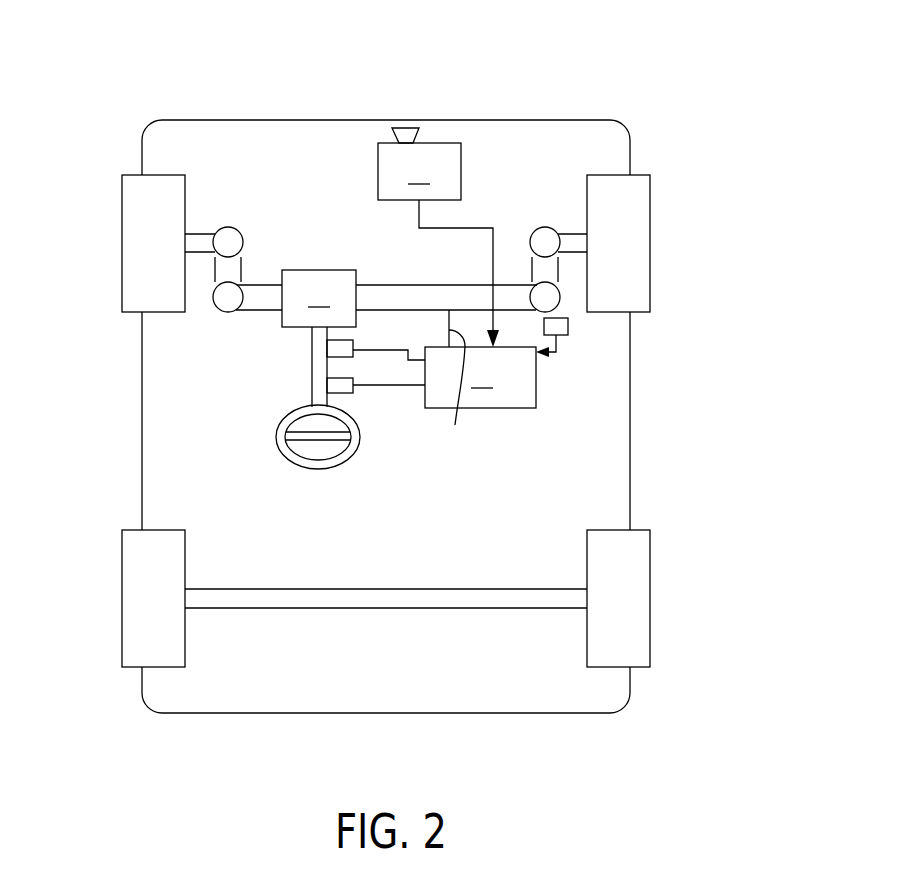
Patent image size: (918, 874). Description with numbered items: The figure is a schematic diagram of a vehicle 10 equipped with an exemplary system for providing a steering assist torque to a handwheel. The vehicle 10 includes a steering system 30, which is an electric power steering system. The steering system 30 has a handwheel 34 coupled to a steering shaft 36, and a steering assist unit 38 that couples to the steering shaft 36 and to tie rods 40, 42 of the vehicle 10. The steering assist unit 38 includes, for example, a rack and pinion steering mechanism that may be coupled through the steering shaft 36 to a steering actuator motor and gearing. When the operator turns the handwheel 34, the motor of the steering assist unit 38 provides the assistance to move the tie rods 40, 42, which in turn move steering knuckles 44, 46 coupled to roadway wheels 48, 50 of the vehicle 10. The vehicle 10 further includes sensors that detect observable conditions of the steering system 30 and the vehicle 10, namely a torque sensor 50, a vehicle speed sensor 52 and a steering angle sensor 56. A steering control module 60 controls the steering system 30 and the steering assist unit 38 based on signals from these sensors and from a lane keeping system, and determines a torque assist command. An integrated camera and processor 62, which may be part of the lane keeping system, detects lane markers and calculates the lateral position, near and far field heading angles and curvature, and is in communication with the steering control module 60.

The vehicle 10 is at (586, 98).
The steering system 30 is at (248, 373).
The handwheel 34 is at (362, 443).
The steering shaft 36 is at (311, 382).
The steering assist unit 38 is at (319, 298).
The tie rod 40 is at (393, 292).
The tie rod 42 is at (459, 303).
The steering knuckle 44 is at (580, 238).
The steering knuckle 46 is at (197, 236).
The roadway wheel 48 is at (650, 228).
The torque sensor 50 is at (121, 218).
The vehicle speed sensor 52 is at (555, 326).
The steering angle sensor 56 is at (346, 385).
The steering control module 60 is at (480, 396).
The camera and processor 62 is at (438, 237).